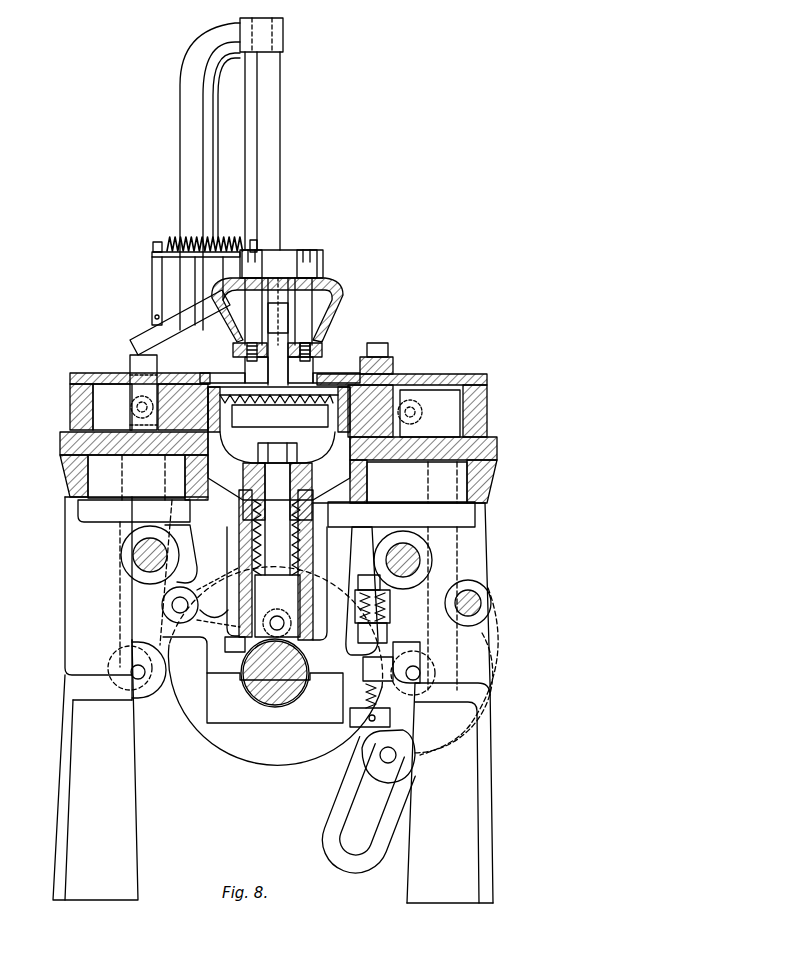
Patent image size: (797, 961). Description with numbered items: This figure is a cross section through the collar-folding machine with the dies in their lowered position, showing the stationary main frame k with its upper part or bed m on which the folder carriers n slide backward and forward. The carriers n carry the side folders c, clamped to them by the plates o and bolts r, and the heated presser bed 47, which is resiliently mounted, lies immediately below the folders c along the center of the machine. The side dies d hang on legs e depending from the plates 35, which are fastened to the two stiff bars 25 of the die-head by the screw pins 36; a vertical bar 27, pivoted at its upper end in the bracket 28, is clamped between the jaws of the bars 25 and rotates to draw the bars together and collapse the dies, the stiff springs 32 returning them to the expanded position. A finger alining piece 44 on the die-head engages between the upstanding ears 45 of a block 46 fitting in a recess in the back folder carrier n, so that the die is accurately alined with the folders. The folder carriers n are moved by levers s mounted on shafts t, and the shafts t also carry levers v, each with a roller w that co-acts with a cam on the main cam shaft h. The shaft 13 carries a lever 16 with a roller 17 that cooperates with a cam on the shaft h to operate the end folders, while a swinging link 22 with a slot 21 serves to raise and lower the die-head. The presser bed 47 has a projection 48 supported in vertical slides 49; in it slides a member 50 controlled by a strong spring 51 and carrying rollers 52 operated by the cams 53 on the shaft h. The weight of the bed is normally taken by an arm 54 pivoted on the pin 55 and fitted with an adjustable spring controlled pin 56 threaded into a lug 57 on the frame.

The shaft 13 is at (475, 598).
The lever 16 is at (488, 673).
The roller 17 is at (405, 770).
The slot 21 is at (340, 800).
The swinging link 22 is at (362, 858).
The stiff bars 25 is at (340, 298).
The vertical bar 27 is at (270, 145).
The bracket 28 is at (190, 138).
The springs 32 is at (170, 240).
The plates 35 is at (316, 352).
The screw pins 36 is at (252, 298).
The finger alining piece 44 is at (142, 342).
The upstanding ears 45 is at (140, 360).
The block 46 is at (123, 407).
The presser bed 47 is at (279, 443).
The projection 48 is at (302, 480).
The vertical slides 49 is at (322, 545).
The member 50 is at (303, 537).
The spring 51 is at (236, 540).
The rollers 52 is at (250, 647).
The cams 53 is at (252, 690).
The arm 54 is at (362, 662).
The pin 55 is at (172, 608).
The spring controlled pin 56 is at (390, 595).
The lug 57 is at (350, 694).
The side folders c is at (280, 367).
The side dies d is at (278, 331).
The legs e is at (275, 368).
The bolt g is at (277, 509).
The main operating cam shaft h is at (290, 690).
The main frame k is at (215, 676).
The bed m is at (488, 470).
The folder carriers n is at (480, 410).
The plates o is at (96, 372).
The bolts r is at (385, 345).
The levers s is at (277, 479).
The shafts t is at (132, 557).
The levers v is at (120, 605).
The roller w is at (148, 700).